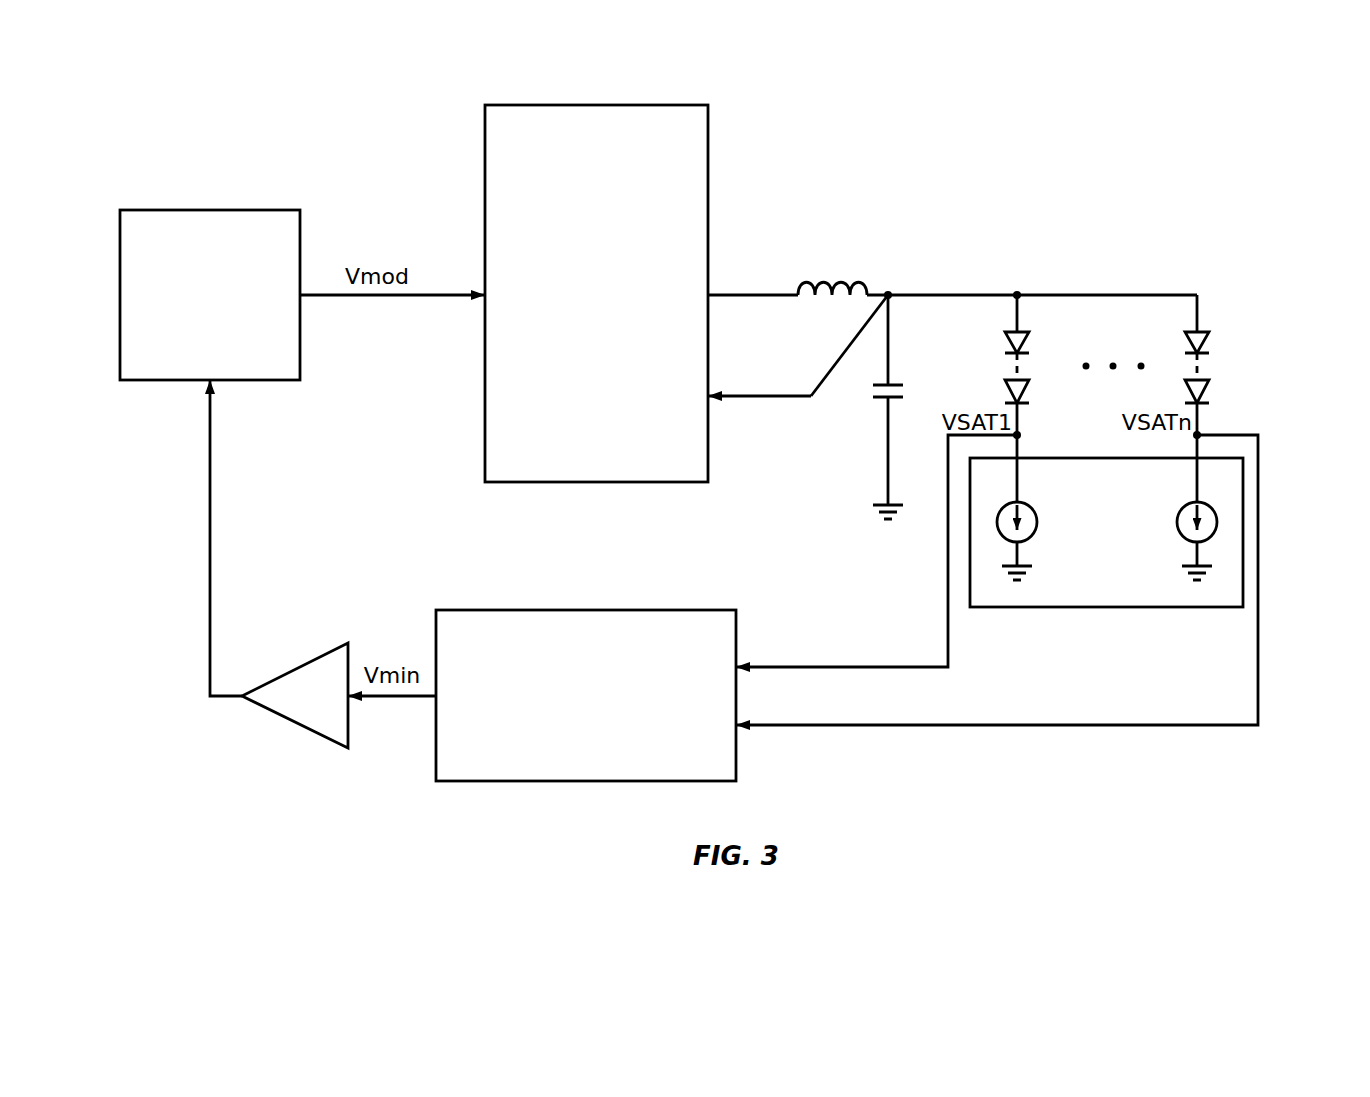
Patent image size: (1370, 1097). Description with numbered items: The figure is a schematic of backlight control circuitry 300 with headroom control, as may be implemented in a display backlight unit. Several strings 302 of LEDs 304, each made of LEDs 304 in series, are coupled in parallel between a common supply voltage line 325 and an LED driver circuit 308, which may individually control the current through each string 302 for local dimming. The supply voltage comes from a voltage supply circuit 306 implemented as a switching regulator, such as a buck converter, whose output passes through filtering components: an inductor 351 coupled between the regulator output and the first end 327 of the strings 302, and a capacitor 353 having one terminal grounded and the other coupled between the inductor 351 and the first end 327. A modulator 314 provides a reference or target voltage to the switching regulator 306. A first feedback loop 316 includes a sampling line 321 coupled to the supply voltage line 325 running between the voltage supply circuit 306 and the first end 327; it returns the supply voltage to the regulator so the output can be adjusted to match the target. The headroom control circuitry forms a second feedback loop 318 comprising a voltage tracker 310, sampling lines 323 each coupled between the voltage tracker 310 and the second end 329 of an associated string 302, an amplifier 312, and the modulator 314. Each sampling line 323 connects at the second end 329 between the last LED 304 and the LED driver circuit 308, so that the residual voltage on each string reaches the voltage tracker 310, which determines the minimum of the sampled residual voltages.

The backlight control circuitry 300 is at (1060, 108).
The strings of LEDs 302 is at (1034, 345).
The LED 304 is at (1208, 393).
The voltage supply circuit 306 is at (596, 293).
The LED driver circuit 308 is at (1106, 521).
The voltage tracker 310 is at (586, 695).
The amplifier 312 is at (283, 718).
The modulator 314 is at (210, 295).
The first feedback loop 316 is at (770, 398).
The second feedback loop 318 is at (1123, 742).
The sampling line 321 is at (843, 350).
The sampling lines 323 is at (815, 665).
The supply voltage line 325 is at (1172, 293).
The first end of LED strings 327 is at (1227, 262).
The second end of string 329 is at (1207, 446).
The inductor 351 is at (843, 283).
The capacitor 353 is at (905, 393).